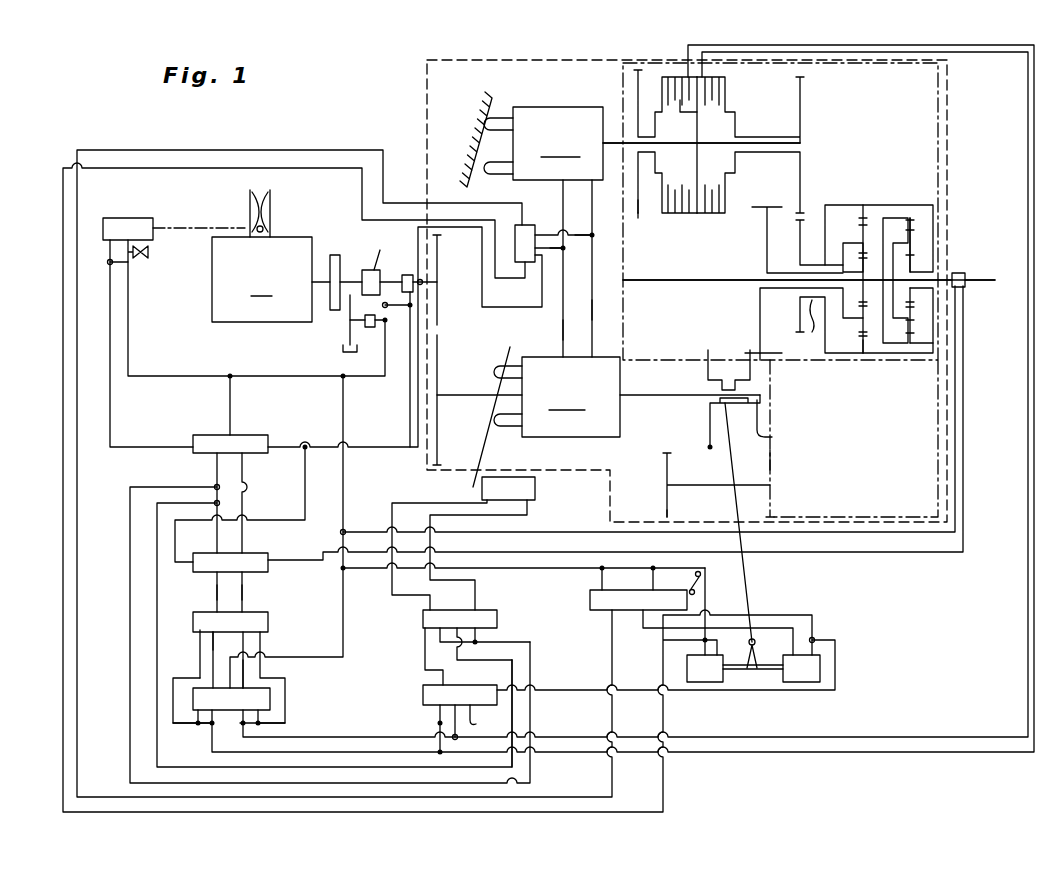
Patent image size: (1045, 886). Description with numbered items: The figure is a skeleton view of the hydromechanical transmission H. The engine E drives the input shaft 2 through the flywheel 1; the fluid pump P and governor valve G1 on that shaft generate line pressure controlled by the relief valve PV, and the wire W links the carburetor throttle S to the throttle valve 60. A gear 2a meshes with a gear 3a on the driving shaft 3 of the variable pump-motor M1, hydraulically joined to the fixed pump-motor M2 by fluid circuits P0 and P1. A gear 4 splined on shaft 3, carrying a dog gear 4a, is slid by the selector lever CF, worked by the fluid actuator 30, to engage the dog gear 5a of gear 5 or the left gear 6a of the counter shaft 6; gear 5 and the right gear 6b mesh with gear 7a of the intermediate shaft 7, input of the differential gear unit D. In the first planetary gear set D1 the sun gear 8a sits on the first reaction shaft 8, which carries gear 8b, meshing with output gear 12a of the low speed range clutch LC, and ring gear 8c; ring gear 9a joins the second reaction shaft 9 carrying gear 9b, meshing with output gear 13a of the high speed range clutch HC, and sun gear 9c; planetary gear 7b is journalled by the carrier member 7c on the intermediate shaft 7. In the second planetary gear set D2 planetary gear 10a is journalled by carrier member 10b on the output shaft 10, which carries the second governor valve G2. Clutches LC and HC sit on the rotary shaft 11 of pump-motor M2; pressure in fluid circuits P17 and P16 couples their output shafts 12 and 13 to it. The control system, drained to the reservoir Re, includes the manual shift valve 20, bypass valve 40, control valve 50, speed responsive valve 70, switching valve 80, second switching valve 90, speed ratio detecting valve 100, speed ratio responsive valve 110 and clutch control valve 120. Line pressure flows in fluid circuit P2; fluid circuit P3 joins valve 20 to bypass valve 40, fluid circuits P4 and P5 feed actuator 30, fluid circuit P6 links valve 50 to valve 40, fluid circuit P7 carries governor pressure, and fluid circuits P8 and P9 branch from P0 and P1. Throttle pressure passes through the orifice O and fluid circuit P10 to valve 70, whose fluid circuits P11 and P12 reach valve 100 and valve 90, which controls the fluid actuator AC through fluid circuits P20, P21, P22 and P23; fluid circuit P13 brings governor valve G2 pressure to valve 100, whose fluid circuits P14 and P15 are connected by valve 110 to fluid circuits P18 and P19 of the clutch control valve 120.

The flywheel 1 is at (334, 255).
The input shaft 2 is at (364, 270).
The gear 2a is at (439, 325).
The driving shaft 3 is at (452, 395).
The gear 3a is at (439, 337).
The gear 4 is at (710, 447).
The dog gear 4a is at (729, 358).
The gear 5 is at (773, 438).
The dog gear 5a is at (710, 405).
The counter shaft 6 is at (698, 485).
The left gear 6a is at (665, 515).
The right gear 6b is at (772, 455).
The intermediate shaft 7 is at (770, 290).
The gear 7a is at (758, 350).
The planetary gear 7b is at (858, 335).
The carrier member 7c is at (858, 220).
The first reaction shaft 8 is at (698, 280).
The sun gear 8a is at (843, 258).
The gear 8b is at (640, 225).
The ring gear 8c is at (916, 350).
The second reaction shaft 9 is at (813, 320).
The ring gear 9a is at (870, 348).
The gear 9b is at (767, 228).
The sun gear 9c is at (920, 291).
The output shaft 10 is at (990, 280).
The planetary gear 10a is at (918, 228).
The carrier member 10b is at (905, 318).
The rotary shaft 11 is at (800, 143).
The output shaft 12 is at (650, 157).
The output gear 12a is at (640, 215).
The output shaft 13 is at (775, 158).
The output gear 13a is at (800, 225).
The manual shift valve 20 is at (626, 610).
The fluid actuator 30 is at (801, 668).
The bypass valve 40 is at (528, 225).
The control valve 50 is at (705, 668).
The throttle valve 60 is at (123, 218).
The speed responsive valve 70 is at (249, 435).
The switching valve 80 is at (423, 693).
The second switching valve 90 is at (423, 618).
The speed ratio detecting valve 100 is at (270, 568).
The speed ratio responsive valve 110 is at (270, 625).
The clutch control valve 120 is at (193, 699).
The vehicle engine E is at (262, 279).
The throttle S is at (270, 220).
The wire W is at (197, 228).
The orifice O is at (140, 258).
The fluid pump P is at (379, 248).
The governor valve G1 is at (407, 275).
The second governor valve G2 is at (956, 272).
The relief valve PV is at (363, 322).
The reservoir Re is at (345, 347).
The first positive displacement pump-motor M1 is at (546, 417).
The second positive displacement pump-motor M2 is at (531, 139).
The hydromechanical transmission H is at (427, 105).
The high speed range clutch HC is at (730, 92).
The low speed range clutch LC is at (665, 106).
The differential gear unit D is at (785, 363).
The first planetary gear set D1 is at (883, 198).
The second planetary gear set D2 is at (920, 199).
The fluid actuator AC is at (535, 490).
The selector lever CF is at (756, 640).
The fluid circuit P0 is at (563, 332).
The fluid circuit P1 is at (594, 305).
The fluid circuit P2 is at (130, 305).
The fluid circuit P3 is at (463, 203).
The fluid circuit P4 is at (651, 630).
The fluid circuit P5 is at (547, 692).
The fluid circuit P6 is at (493, 243).
The fluid circuit P7 is at (482, 268).
The fluid circuit P8 is at (570, 250).
The fluid circuit P9 is at (580, 235).
The fluid circuit P10 is at (125, 447).
The fluid circuit P11 is at (243, 470).
The fluid circuit P12 is at (215, 470).
The fluid circuit P13 is at (288, 566).
The fluid circuit P14 is at (243, 596).
The fluid circuit P15 is at (217, 596).
The fluid circuit P16 is at (862, 55).
The fluid circuit P17 is at (872, 48).
The fluid circuit P18 is at (243, 672).
The fluid circuit P19 is at (213, 643).
The fluid circuit P20 is at (424, 648).
The fluid circuit P21 is at (478, 673).
The fluid circuit P22 is at (392, 590).
The fluid circuit P23 is at (478, 585).